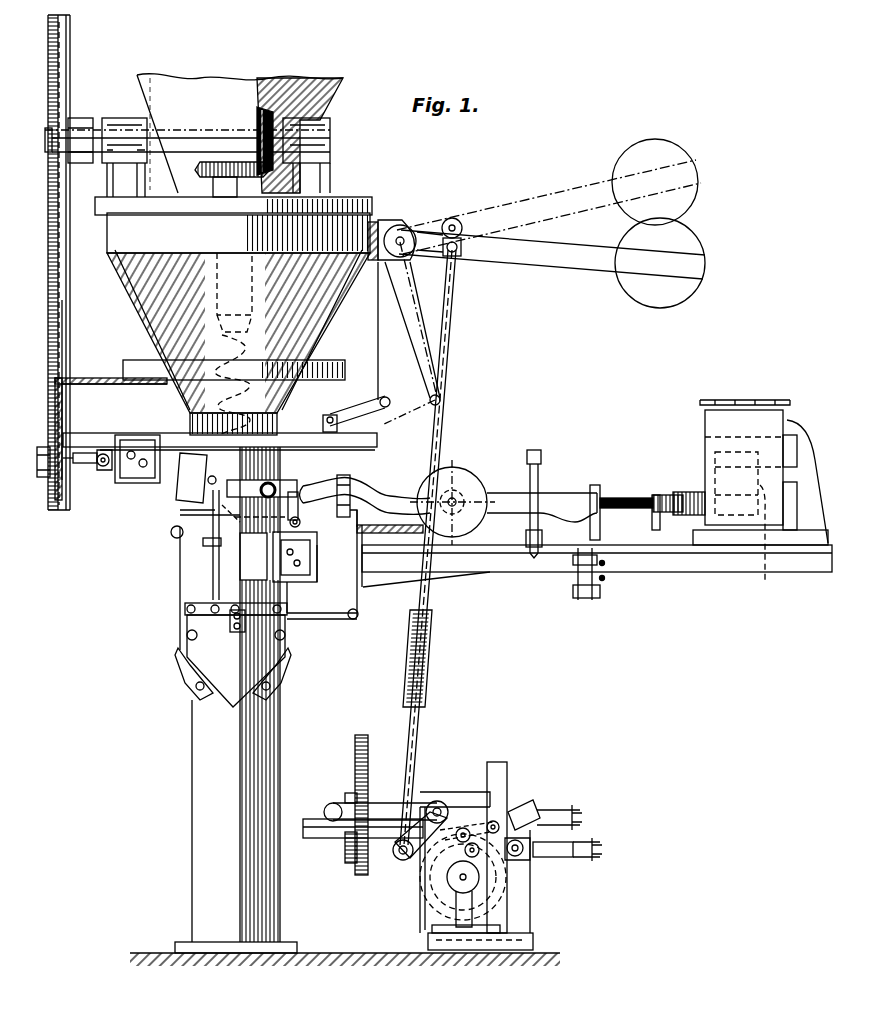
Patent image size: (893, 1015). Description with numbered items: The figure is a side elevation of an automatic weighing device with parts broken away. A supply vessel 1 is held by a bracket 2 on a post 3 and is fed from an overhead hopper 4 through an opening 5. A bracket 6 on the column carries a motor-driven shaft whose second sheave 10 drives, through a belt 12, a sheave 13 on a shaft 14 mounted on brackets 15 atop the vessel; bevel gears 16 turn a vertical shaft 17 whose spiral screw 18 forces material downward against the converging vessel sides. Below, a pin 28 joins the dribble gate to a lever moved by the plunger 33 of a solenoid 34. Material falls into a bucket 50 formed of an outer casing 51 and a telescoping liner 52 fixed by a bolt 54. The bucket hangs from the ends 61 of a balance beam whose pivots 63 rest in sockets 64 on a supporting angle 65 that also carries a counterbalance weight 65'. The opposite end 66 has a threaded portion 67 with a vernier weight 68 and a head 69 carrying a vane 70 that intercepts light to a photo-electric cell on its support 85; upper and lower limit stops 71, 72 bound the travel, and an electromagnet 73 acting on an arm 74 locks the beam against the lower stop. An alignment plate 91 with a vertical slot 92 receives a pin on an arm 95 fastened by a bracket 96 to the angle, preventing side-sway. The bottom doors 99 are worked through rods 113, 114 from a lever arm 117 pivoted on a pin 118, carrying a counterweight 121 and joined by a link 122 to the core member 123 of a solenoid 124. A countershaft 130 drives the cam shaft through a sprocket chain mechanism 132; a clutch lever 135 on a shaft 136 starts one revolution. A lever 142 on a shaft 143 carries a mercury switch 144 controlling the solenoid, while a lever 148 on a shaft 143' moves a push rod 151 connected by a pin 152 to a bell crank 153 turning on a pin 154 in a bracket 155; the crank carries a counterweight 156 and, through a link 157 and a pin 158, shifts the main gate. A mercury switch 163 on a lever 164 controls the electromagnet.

The supply vessel 1 is at (316, 322).
The bracket 2 is at (345, 376).
The post 3 is at (268, 752).
The overhead hopper 4 is at (326, 100).
The opening 5 is at (186, 190).
The bracket 6 is at (420, 478).
The second sheave 10 is at (68, 412).
The belt 12 is at (68, 325).
The sheave 13 is at (68, 72).
The shaft 14 is at (150, 135).
The brackets 15 is at (116, 118).
The bevel gears 16 is at (258, 122).
The vertical shaft 17 is at (222, 282).
The spiral screw 18 is at (220, 362).
The pin 28 is at (86, 450).
The plunger 33 is at (105, 452).
The solenoid 34 is at (136, 438).
The bucket 50 is at (246, 669).
The outer casing 51 is at (178, 598).
The inner liner 52 is at (180, 516).
The bolt 54 is at (174, 538).
The beam ends 61 is at (315, 484).
The pivots 63 is at (335, 500).
The sockets 64 is at (358, 512).
The supporting angle 65 is at (594, 556).
The counterbalance weight 65' is at (452, 494).
The opposite end of beam 66 is at (586, 492).
The threaded portion 67 is at (622, 498).
The vernier weight 68 is at (658, 530).
The head 69 is at (662, 495).
The vane 70 is at (688, 492).
The upper limit stop 71 is at (542, 472).
The lower limit stop 72 is at (526, 528).
The electromagnet 73 is at (596, 596).
The arm 74 is at (600, 525).
The support 85 is at (770, 420).
The alignment plate 91 is at (233, 622).
The vertical slot 92 is at (253, 556).
The arm 95 is at (323, 622).
The bracket 96 is at (360, 614).
The doors 99 is at (248, 705).
The rod 113 is at (218, 582).
The rod 114 is at (212, 560).
The lever arm 117 is at (242, 480).
The pin 118 is at (258, 493).
The counterweight 121 is at (195, 475).
The link 122 is at (300, 520).
The core member 123 is at (300, 548).
The solenoid 124 is at (302, 565).
The countershaft 130 is at (330, 840).
The sprocket chain mechanism 132 is at (358, 872).
The lever 135 is at (380, 808).
The shaft 136 is at (442, 800).
The lever 142 is at (524, 803).
The shaft 143 is at (487, 842).
The shaft 143' is at (543, 877).
The mercury switch 144 is at (553, 812).
The lever 148 is at (420, 855).
The push rod 151 is at (446, 313).
The pin 152 is at (458, 258).
The bell crank 153 is at (553, 247).
The pin 154 is at (425, 232).
The bracket 155 is at (398, 220).
The counterweight 156 is at (683, 240).
The link 157 is at (362, 404).
The pin 158 is at (325, 420).
The mercury switch 163 is at (580, 860).
The lever 164 is at (548, 858).